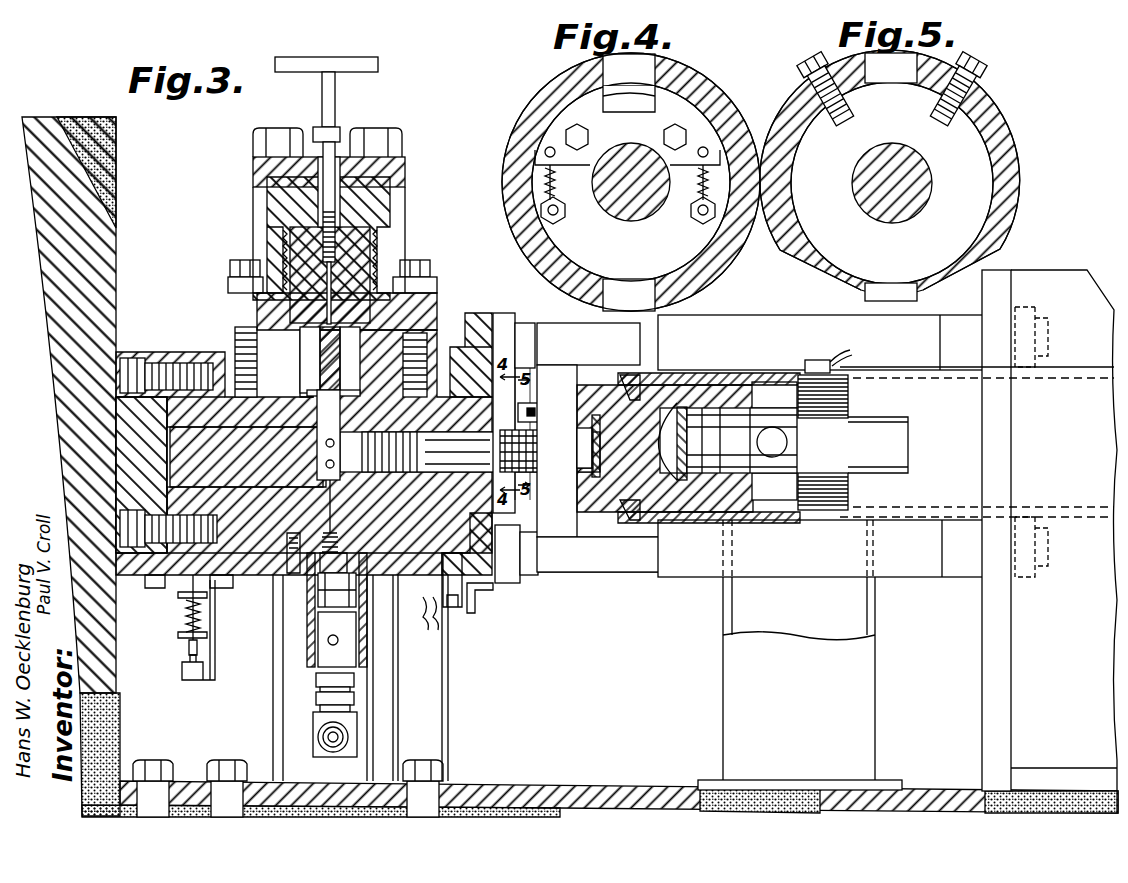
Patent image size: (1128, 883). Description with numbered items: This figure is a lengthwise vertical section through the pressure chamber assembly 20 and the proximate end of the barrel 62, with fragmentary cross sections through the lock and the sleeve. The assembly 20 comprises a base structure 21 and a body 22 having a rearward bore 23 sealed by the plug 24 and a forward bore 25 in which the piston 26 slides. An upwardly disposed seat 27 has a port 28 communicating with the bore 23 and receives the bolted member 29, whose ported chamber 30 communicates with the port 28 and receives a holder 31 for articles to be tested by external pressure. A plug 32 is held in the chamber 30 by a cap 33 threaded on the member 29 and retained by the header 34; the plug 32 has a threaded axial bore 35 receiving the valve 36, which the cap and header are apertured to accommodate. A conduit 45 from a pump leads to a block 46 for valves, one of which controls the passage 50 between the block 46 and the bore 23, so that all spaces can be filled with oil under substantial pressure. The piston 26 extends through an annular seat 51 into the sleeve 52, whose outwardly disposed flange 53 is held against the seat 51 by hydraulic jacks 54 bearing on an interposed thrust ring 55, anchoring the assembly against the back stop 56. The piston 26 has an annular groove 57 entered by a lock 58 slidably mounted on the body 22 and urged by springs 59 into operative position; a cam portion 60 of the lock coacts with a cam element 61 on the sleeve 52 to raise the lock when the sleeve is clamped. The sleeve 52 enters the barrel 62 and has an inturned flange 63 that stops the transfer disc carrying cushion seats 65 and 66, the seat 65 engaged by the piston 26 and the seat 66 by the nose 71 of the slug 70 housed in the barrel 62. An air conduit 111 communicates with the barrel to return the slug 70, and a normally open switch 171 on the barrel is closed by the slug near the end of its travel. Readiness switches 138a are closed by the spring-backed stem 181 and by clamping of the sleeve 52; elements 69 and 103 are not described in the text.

In FIG. 3, the pressure chamber assembly 20 is at (157, 352).
In FIG. 3, the base structure 21 is at (265, 772).
In FIG. 3, the body 22 is at (180, 352).
In FIG. 3, the rearward bore 23 is at (248, 576).
In FIG. 3, the plug 24 is at (140, 578).
In FIG. 3, the forward bore 25 is at (403, 580).
In FIG. 3, the piston 26 is at (575, 548).
In FIG. 4, the piston 26 is at (634, 222).
In FIG. 5, the piston 26 is at (894, 223).
In FIG. 3, the seat 27 is at (280, 360).
In FIG. 3, the port 28 is at (437, 305).
In FIG. 3, the member 29 is at (440, 285).
In FIG. 3, the ported chamber 30 is at (246, 327).
In FIG. 3, the holder 31 is at (400, 255).
In FIG. 3, the plug 32 is at (295, 255).
In FIG. 3, the cap 33 is at (392, 202).
In FIG. 3, the header 34 is at (405, 170).
In FIG. 3, the axial bore 35 is at (395, 235).
In FIG. 3, the valve 36 is at (340, 115).
In FIG. 3, the conduit 45 is at (350, 737).
In FIG. 3, the block 46 is at (345, 655).
In FIG. 3, the passage 50 is at (326, 487).
In FIG. 3, the annular seat 51 is at (490, 590).
In FIG. 3, the sleeve 52 is at (612, 556).
In FIG. 4, the sleeve 52 is at (520, 132).
In FIG. 5, the sleeve 52 is at (790, 118).
In FIG. 3, the flange 53 is at (485, 340).
In FIG. 3, the hydraulic jacks 54 is at (755, 318).
In FIG. 3, the thrust ring 55 is at (500, 340).
In FIG. 3, the back stop 56 is at (116, 290).
In FIG. 3, the annular groove 57 is at (530, 465).
In FIG. 3, the lock 58 is at (520, 340).
In FIG. 4, the lock 58 is at (592, 158).
In FIG. 4, the springs 59 is at (565, 210).
In FIG. 3, the cam portion 60 is at (530, 403).
In FIG. 4, the cam portion 60 is at (637, 108).
In FIG. 3, the cam element 61 is at (565, 385).
In FIG. 5, the cam element 61 is at (873, 100).
In FIG. 3, the barrel 62 is at (962, 510).
In FIG. 3, the inturned flange 63 is at (705, 375).
In FIG. 3, the cushion seat 65 is at (600, 517).
In FIG. 3, the cushion seat 66 is at (660, 523).
In FIG. 3, the upper flange 69 is at (670, 373).
In FIG. 3, the slug 70 is at (838, 413).
In FIG. 3, the nose 71 is at (775, 500).
In FIG. 3, the shaft end 103 is at (910, 440).
In FIG. 3, the conduit 111 is at (772, 427).
In FIG. 3, the switches 138a is at (452, 610).
In FIG. 3, the switch 171 is at (814, 360).
In FIG. 3, the spring-backed stem 181 is at (182, 620).